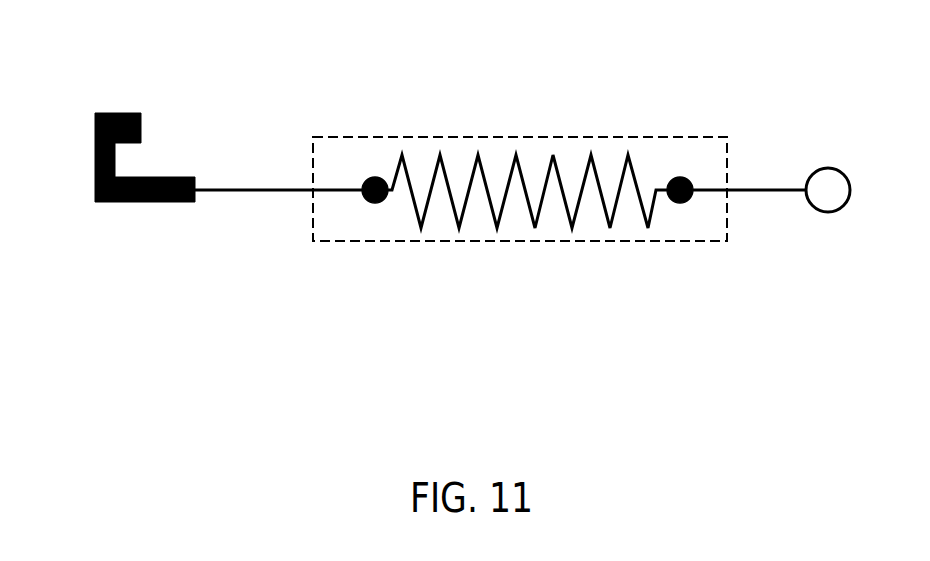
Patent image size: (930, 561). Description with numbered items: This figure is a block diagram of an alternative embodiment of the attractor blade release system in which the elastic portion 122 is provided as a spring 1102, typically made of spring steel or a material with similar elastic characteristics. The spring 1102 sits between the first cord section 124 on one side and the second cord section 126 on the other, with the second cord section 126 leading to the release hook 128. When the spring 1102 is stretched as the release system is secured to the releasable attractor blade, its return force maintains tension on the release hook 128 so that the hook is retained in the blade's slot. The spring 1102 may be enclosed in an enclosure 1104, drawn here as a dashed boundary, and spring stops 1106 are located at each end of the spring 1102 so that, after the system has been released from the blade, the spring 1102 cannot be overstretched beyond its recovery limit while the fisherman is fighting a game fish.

The elastic portion 122 is at (511, 158).
The first cord section 124 is at (740, 188).
The second cord section 126 is at (278, 192).
The release hook 128 is at (118, 112).
The spring 1102 is at (563, 172).
The enclosure 1104 is at (375, 243).
The spring stops 1106 is at (376, 177).